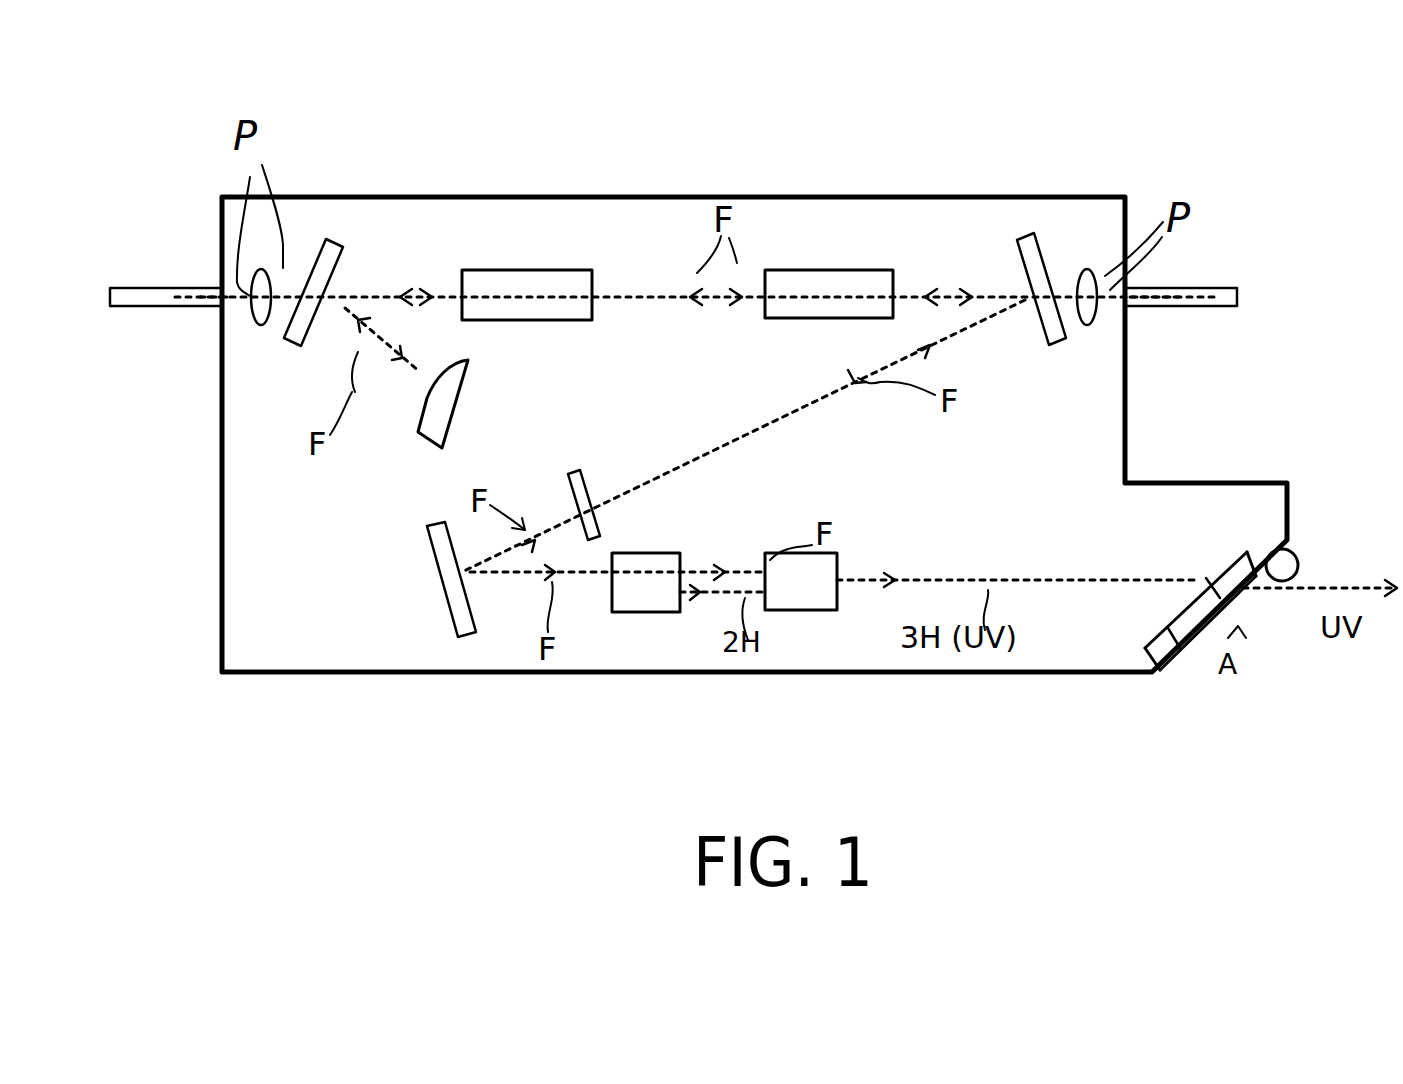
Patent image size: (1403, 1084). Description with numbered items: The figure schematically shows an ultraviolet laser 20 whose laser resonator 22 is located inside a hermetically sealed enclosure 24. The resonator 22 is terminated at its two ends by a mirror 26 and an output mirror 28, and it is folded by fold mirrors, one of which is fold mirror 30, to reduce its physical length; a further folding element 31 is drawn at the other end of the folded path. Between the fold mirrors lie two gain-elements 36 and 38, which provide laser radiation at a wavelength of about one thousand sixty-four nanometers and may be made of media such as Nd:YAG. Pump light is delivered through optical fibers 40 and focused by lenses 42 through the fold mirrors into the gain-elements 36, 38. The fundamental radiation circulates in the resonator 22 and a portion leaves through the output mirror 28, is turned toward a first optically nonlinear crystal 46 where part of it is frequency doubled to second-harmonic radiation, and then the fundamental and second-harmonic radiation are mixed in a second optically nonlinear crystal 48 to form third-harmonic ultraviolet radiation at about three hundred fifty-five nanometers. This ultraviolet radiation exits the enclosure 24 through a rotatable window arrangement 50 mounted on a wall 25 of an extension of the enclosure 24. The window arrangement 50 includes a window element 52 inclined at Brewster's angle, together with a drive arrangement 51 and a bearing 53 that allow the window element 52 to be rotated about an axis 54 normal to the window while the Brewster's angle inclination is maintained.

The ultraviolet laser 20 is at (527, 748).
The laser resonator 22 is at (690, 348).
The hermetically sealed enclosure 24 is at (905, 683).
The wall 25 is at (1163, 657).
The mirror 26 is at (467, 380).
The output mirror 28 is at (580, 472).
The fold mirror 30 is at (352, 250).
The polarizing beam splitter 31 is at (1040, 245).
The gain-element 36 is at (535, 270).
The gain-element 38 is at (808, 270).
The optical fiber 40 is at (145, 285).
The lens 42 is at (259, 328).
The first optically nonlinear crystal 46 is at (665, 553).
The second optically nonlinear crystal 48 is at (828, 553).
The rotatable window arrangement 50 is at (1282, 640).
The drive arrangement 51 is at (1292, 548).
The window element 52 is at (1193, 640).
The bearing 53 is at (1261, 545).
The axis 54 is at (1253, 512).